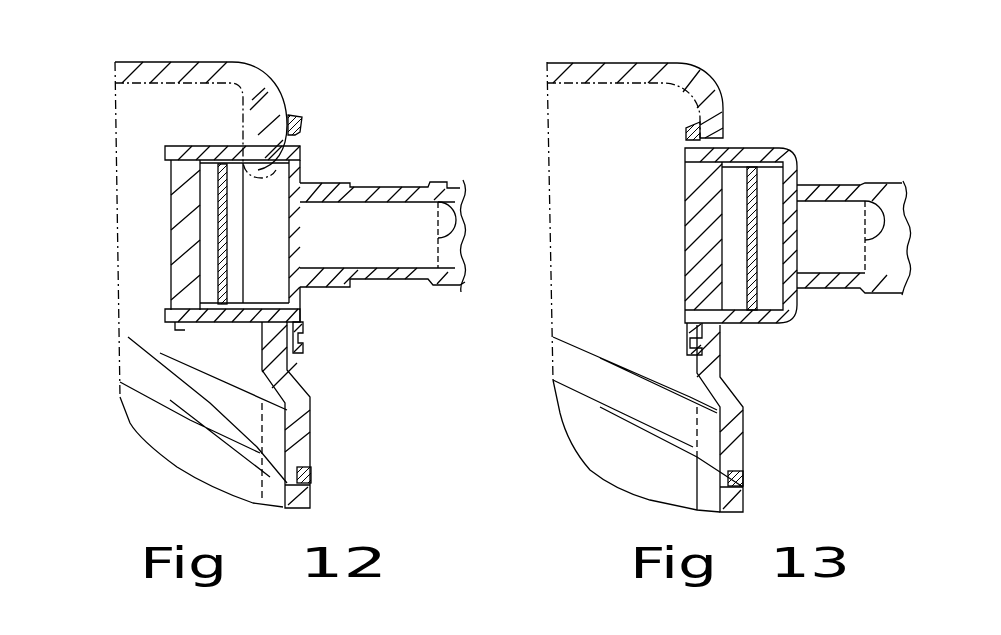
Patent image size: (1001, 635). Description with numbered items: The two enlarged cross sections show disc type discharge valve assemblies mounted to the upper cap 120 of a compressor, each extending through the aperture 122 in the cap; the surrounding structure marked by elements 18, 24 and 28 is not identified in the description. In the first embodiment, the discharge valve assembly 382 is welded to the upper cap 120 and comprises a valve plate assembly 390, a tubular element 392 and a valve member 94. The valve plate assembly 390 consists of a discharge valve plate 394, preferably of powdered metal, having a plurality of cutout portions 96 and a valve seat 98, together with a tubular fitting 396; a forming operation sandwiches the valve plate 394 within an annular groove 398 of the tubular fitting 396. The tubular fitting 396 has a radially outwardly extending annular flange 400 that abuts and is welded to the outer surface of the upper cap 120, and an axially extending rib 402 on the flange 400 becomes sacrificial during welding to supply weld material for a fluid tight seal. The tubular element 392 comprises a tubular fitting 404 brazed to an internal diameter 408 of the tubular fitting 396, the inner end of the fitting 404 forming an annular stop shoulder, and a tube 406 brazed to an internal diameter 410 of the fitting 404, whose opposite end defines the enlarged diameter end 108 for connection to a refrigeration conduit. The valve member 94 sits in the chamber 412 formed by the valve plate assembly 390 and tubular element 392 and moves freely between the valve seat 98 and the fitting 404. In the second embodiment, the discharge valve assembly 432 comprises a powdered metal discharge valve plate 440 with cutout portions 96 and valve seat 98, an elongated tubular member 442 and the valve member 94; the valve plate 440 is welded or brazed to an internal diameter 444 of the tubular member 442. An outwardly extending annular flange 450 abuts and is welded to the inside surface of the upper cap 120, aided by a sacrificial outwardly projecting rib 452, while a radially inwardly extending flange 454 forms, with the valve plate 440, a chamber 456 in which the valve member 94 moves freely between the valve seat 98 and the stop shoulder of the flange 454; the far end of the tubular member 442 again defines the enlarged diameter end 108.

In FIG. 12, the base plate 18 is at (303, 502).
In FIG. 13, the base plate 18 is at (743, 497).
In FIG. 12, the housing 24 is at (170, 398).
In FIG. 13, the housing 24 is at (602, 392).
In FIG. 12, the wall 28 is at (170, 127).
In FIG. 13, the wall 28 is at (628, 127).
In FIG. 12, the valve member 94 is at (227, 292).
In FIG. 13, the valve member 94 is at (747, 283).
In FIG. 12, the cutout portions 96 is at (190, 290).
In FIG. 13, the cutout portions 96 is at (700, 187).
In FIG. 12, the valve seat 98 is at (200, 208).
In FIG. 13, the valve seat 98 is at (790, 285).
In FIG. 12, the enlarged diameter end 108 is at (438, 238).
In FIG. 13, the enlarged diameter end 108 is at (865, 240).
In FIG. 12, the upper cap 120 is at (211, 68).
In FIG. 13, the upper cap 120 is at (588, 63).
In FIG. 12, the aperture 122 is at (307, 325).
In FIG. 13, the aperture 122 is at (735, 150).
In FIG. 12, the discharge valve assembly 382 is at (397, 24).
In FIG. 12, the valve plate assembly 390 is at (160, 201).
In FIG. 12, the tubular element 392 is at (420, 147).
In FIG. 12, the discharge valve plate 394 is at (205, 240).
In FIG. 12, the tubular fitting 396 is at (185, 144).
In FIG. 12, the annular groove 398 is at (217, 322).
In FIG. 12, the annular flange 400 is at (300, 343).
In FIG. 12, the axially extending rib 402 is at (303, 125).
In FIG. 12, the tubular fitting 404 is at (333, 290).
In FIG. 12, the tube 406 is at (407, 282).
In FIG. 12, the internal diameter 408 is at (257, 108).
In FIG. 12, the internal diameter 410 is at (323, 184).
In FIG. 12, the chamber 412 is at (210, 255).
In FIG. 13, the discharge valve assembly 432 is at (853, 33).
In FIG. 13, the discharge valve plate 440 is at (693, 237).
In FIG. 13, the elongated tubular member 442 is at (777, 320).
In FIG. 13, the internal diameter 444 is at (700, 310).
In FIG. 13, the annular flange 450 is at (703, 352).
In FIG. 13, the outwardly projecting rib 452 is at (688, 135).
In FIG. 13, the radially inwardly extending flange 454 is at (793, 173).
In FIG. 13, the chamber 456 is at (737, 225).